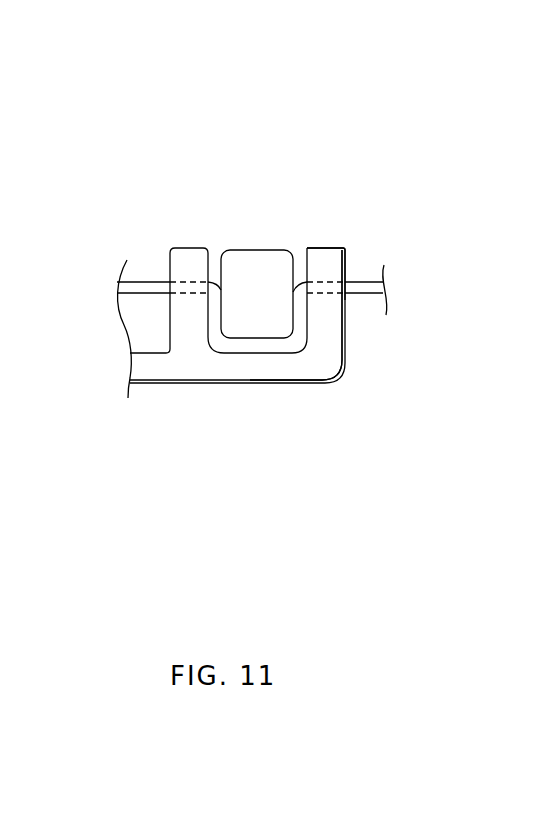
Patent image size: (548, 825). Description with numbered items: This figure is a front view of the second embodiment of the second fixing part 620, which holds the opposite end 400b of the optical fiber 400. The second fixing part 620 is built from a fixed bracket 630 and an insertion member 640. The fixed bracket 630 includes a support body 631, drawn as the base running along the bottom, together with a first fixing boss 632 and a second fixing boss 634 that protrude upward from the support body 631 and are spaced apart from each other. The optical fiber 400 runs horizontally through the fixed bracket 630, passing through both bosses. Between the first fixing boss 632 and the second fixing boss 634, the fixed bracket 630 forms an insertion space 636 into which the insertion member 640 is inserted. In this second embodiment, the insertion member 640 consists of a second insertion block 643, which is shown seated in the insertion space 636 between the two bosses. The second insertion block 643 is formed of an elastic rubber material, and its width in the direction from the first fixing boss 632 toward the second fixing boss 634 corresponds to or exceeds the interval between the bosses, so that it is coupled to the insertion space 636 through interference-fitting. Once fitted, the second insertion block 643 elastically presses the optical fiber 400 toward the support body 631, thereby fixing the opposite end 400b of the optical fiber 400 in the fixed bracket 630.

The second fixing part 620 is at (84, 28).
The fixed bracket 630 is at (273, 272).
The insertion member 640 is at (211, 196).
The first fixing boss 632 is at (183, 253).
The second fixing boss 634 is at (333, 263).
The insertion space 636 is at (306, 332).
The second insertion block 643 is at (262, 262).
The support body 631 is at (290, 367).
The optical fiber 400 is at (263, 460).
The opposite end of the optical fiber 400b is at (253, 347).